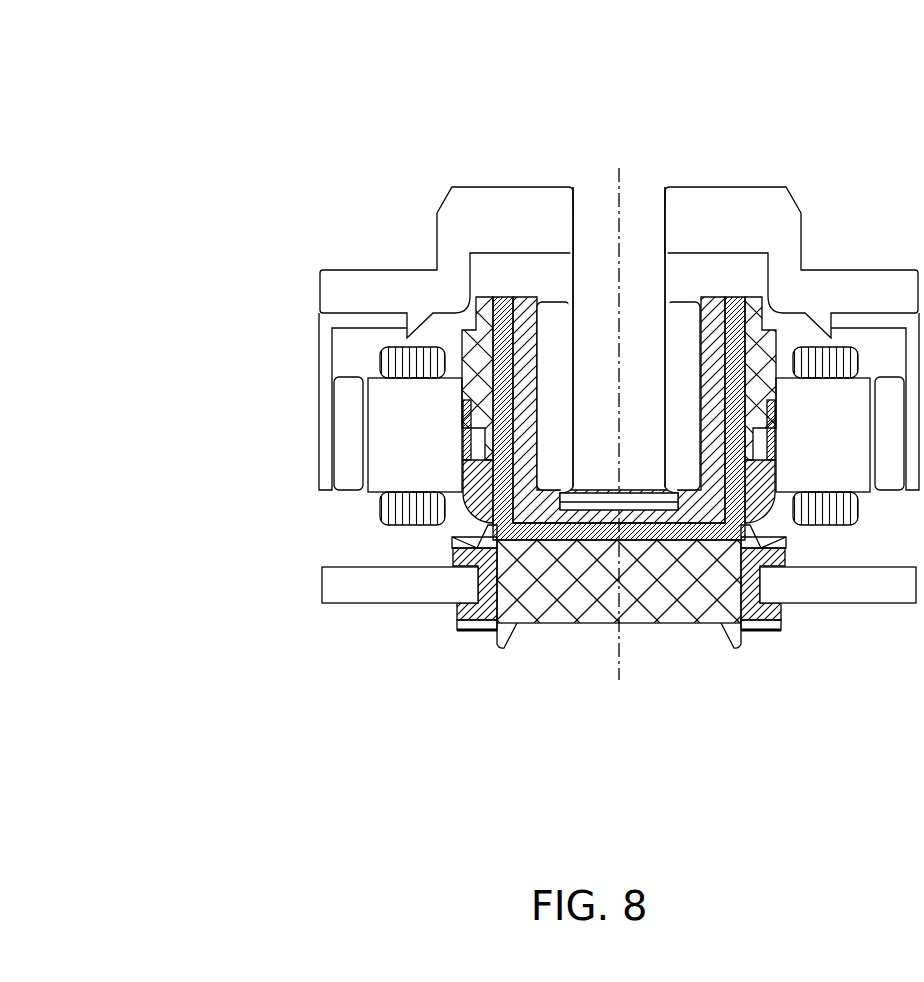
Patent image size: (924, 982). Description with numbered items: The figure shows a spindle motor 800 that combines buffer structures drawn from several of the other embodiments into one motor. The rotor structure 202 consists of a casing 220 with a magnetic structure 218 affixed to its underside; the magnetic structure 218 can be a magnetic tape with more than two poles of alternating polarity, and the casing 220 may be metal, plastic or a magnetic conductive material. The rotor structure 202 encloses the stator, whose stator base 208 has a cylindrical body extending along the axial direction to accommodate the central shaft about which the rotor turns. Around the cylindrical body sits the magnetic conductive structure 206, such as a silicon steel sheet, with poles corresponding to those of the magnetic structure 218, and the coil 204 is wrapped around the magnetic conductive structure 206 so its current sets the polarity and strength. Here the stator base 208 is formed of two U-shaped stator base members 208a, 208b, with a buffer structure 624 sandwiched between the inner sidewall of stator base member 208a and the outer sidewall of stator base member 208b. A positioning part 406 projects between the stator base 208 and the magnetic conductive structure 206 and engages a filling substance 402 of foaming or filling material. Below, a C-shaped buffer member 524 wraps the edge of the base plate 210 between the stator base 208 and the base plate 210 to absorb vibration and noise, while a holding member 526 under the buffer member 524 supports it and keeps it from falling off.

The spindle motor 800 is at (70, 63).
The rotor structure 202 is at (292, 158).
The coil 204 is at (461, 330).
The magnetic conductive structure 206 is at (390, 413).
The stator base 208 is at (137, 430).
The stator base member 208a is at (485, 428).
The stator base member 208b is at (463, 460).
The base plate 210 is at (416, 585).
The magnetic structure 218 is at (348, 401).
The casing 220 is at (395, 295).
The filling substance 402 is at (447, 500).
The positioning part 406 is at (467, 393).
The buffer member 524 is at (517, 630).
The holding member 526 is at (477, 630).
The buffer structure 624 is at (455, 537).